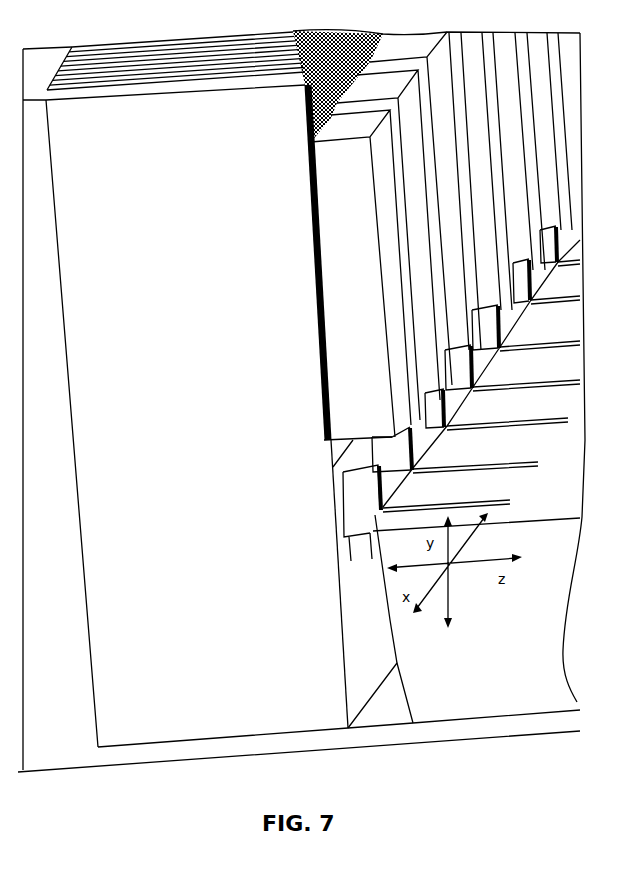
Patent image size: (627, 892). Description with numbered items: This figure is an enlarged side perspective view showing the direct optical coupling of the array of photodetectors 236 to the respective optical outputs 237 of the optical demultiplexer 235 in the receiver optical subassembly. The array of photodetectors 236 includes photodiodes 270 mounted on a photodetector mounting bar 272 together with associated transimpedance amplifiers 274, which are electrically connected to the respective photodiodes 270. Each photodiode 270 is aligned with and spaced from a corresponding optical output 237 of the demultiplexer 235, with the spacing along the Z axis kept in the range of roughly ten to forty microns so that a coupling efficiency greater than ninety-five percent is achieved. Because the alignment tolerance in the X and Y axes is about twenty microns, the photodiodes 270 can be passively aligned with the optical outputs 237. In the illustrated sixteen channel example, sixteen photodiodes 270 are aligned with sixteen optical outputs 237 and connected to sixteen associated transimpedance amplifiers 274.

The photodetector mounting bar 272 is at (108, 695).
The transimpedance amplifier 274 is at (330, 193).
The array of photodetectors 236 is at (466, 447).
The photodiode 270 is at (383, 490).
The optical output 237 is at (377, 512).
The optical demultiplexer 235 is at (447, 713).